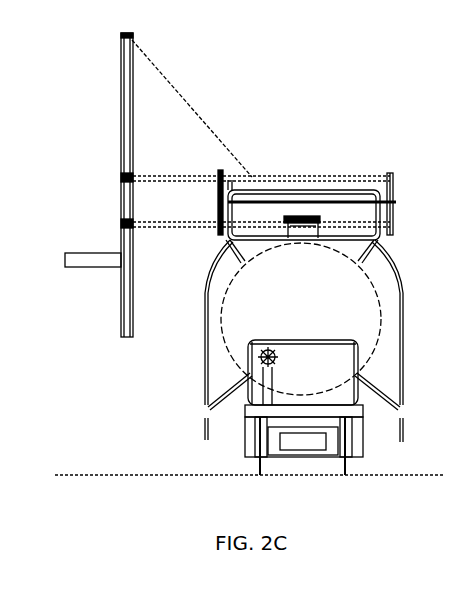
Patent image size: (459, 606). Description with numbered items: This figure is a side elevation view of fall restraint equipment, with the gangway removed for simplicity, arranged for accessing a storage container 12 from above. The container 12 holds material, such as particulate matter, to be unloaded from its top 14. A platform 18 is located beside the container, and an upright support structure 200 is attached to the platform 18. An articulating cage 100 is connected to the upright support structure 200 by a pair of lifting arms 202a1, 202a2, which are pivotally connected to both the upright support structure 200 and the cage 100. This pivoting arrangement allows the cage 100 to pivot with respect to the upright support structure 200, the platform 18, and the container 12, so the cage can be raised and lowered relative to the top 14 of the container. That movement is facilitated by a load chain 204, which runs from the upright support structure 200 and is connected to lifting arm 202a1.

The articulating cage 100 is at (401, 200).
The storage container 12 is at (313, 313).
The top of container 14 is at (303, 226).
The platform 18 is at (102, 259).
The upright support structure 200 is at (134, 139).
The lifting arm 202a1 is at (150, 175).
The lifting arm 202a2 is at (162, 228).
The load chain 204 is at (177, 94).